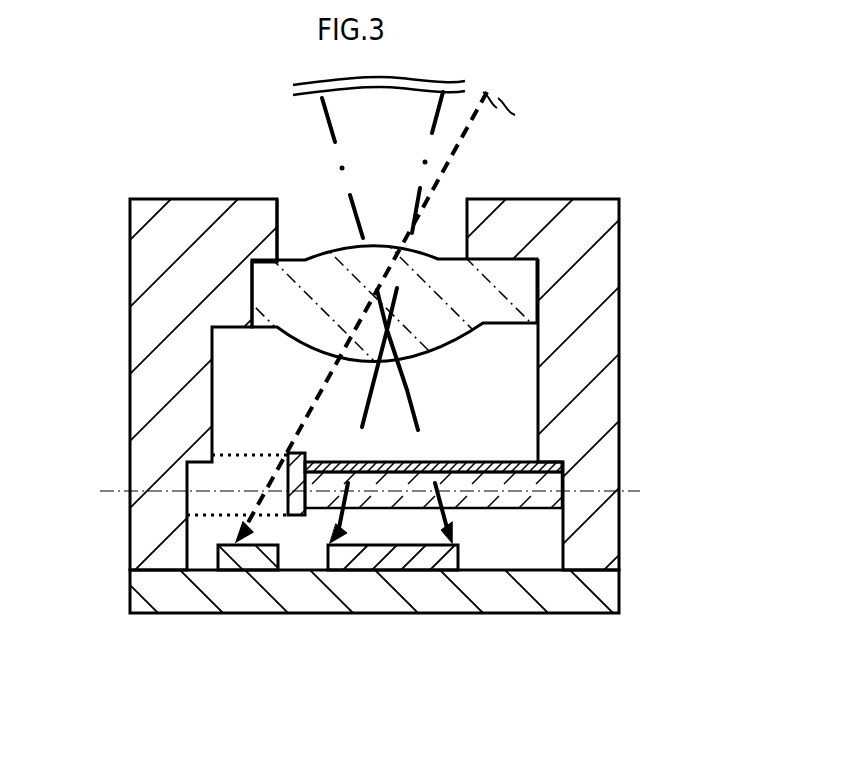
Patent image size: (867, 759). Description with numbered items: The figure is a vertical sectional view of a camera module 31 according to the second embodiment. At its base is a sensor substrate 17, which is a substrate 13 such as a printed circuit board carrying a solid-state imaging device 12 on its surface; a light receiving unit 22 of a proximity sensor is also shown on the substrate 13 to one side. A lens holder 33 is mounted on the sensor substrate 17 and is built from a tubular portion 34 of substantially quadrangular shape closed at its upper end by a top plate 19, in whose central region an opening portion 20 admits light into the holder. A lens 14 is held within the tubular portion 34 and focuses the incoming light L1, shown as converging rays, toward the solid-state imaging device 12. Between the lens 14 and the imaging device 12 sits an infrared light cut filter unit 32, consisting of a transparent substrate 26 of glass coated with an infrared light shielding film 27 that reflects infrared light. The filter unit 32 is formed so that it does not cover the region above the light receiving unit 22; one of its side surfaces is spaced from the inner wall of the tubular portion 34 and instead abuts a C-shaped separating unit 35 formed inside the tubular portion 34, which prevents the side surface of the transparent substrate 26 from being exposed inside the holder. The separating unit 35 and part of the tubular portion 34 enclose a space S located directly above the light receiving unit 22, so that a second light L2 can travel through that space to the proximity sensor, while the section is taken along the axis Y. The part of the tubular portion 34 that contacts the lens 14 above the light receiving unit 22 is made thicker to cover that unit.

The solid-state imaging device 12 is at (370, 570).
The substrate 13 is at (352, 653).
The lens 14 is at (277, 300).
The sensor substrate 17 is at (367, 627).
The top plate 19 is at (597, 225).
The opening portion 20 is at (323, 218).
The light receiving unit 22 is at (227, 570).
The transparent substrate 26 is at (550, 498).
The infrared light shielding film 27 is at (546, 463).
The camera module 31 is at (580, 180).
The infrared light cut filter unit 32 is at (508, 516).
The lens holder 33 is at (433, 384).
The tubular portion 34 is at (597, 274).
The separating unit 35 is at (295, 515).
The first light L1 is at (425, 162).
The second light L2 is at (467, 140).
The space S is at (232, 483).
The axis Y-Y' Y is at (372, 490).